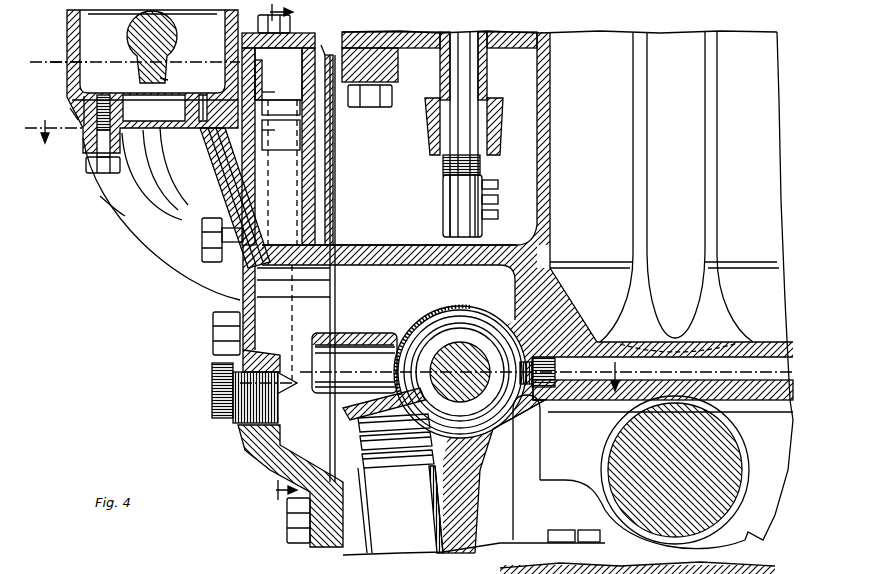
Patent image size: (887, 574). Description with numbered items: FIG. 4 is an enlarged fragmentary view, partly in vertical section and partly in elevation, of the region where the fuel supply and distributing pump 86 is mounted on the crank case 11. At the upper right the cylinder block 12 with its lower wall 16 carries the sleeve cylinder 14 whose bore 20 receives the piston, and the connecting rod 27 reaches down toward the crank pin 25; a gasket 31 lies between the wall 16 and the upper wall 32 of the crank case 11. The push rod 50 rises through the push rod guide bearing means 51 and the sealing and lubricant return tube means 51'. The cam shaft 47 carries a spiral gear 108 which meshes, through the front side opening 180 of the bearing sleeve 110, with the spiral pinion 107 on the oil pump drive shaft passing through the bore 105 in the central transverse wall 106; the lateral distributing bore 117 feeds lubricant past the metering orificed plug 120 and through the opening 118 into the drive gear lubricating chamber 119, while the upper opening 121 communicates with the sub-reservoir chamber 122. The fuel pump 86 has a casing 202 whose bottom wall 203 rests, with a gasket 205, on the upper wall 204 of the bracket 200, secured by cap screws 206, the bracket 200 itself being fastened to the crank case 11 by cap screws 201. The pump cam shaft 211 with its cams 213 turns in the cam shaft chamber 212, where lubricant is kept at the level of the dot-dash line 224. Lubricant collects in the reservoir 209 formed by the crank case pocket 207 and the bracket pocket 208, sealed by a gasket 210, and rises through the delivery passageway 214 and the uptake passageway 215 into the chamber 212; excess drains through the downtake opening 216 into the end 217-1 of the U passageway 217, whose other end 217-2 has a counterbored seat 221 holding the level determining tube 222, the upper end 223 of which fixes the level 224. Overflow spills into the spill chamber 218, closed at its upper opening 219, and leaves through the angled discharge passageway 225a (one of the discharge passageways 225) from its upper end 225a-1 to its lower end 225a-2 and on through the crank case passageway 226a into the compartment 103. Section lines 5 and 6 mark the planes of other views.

The dot-dash lubricant level line 224 is at (50, 62).
The cam shaft chamber 212 is at (147, 31).
The fuel pump cam shaft 211 is at (173, 37).
The uptake passageway 215 is at (204, 96).
The fuel supply and distributing pump 86 is at (67, 76).
The bottom wall 203 is at (85, 100).
The cams 213 is at (173, 82).
The casing 202 is at (72, 98).
The gasket 205 is at (70, 113).
The section line 5- 5 is at (326, 226).
The downtake opening 216 is at (148, 110).
The upper wall 204 is at (85, 140).
The cap screws 206 is at (97, 196).
The upper end of U passageway 217-1 is at (108, 219).
The U passageway 217 is at (140, 232).
The bracket 200 is at (183, 262).
The lubricant delivery passageway 214 is at (243, 272).
The cap screws 201 is at (203, 234).
The section line 6- 6 is at (277, 252).
The metering orificed plug 120 is at (645, 573).
The upper opening 219 is at (286, 33).
The spill chamber 218 is at (278, 74).
The upper end of tube 223 is at (262, 76).
The upper end of discharge passageway 225a-1 is at (270, 109).
The other upper end of U passageway 217-2 is at (273, 135).
The angled discharge passageway 225a is at (269, 172).
The lubricant level determining tube 222 is at (264, 100).
The counterbored seat 221 is at (264, 133).
The gasket 31 is at (334, 52).
The upper wall of crank case 32 is at (358, 62).
The lower cylinder block wall 16 is at (406, 32).
The push rod 50 is at (438, 67).
The sealing and lubricant return tube means 51' is at (443, 66).
The cylinder block 12 is at (505, 33).
The bore 20 is at (553, 226).
The connecting rod 27 is at (700, 230).
The cylinder 14 is at (580, 266).
The push rod guide bearing means 51 is at (474, 168).
The lateral distributing bore 117 is at (645, 370).
The outwardly opening pocket 207 is at (340, 294).
The front side opening 180 is at (418, 340).
The bushing or bearing sleeve 110 is at (440, 333).
The upper opening 121 is at (462, 312).
The spiral gear 108 is at (474, 333).
The sub-reservoir chamber 122 is at (354, 348).
The passageway 226a is at (354, 363).
The inwardly opening pocket 208 is at (308, 322).
The lower end of discharge passageway 225a-2 is at (278, 393).
The spiral pinion 107 is at (343, 426).
The gasket 210 is at (335, 459).
The cam shaft 47 is at (462, 396).
The opening 118 is at (543, 386).
The cam shaft drive gear lubricating chamber 119 is at (523, 386).
The crank pin 25 is at (722, 454).
The reservoir 209 is at (262, 466).
The bore 105 is at (366, 521).
The compartment 103 is at (473, 491).
The crank case 11 is at (345, 556).
The central crank case transverse wall 106 is at (456, 549).
The stud 225 is at (279, 386).